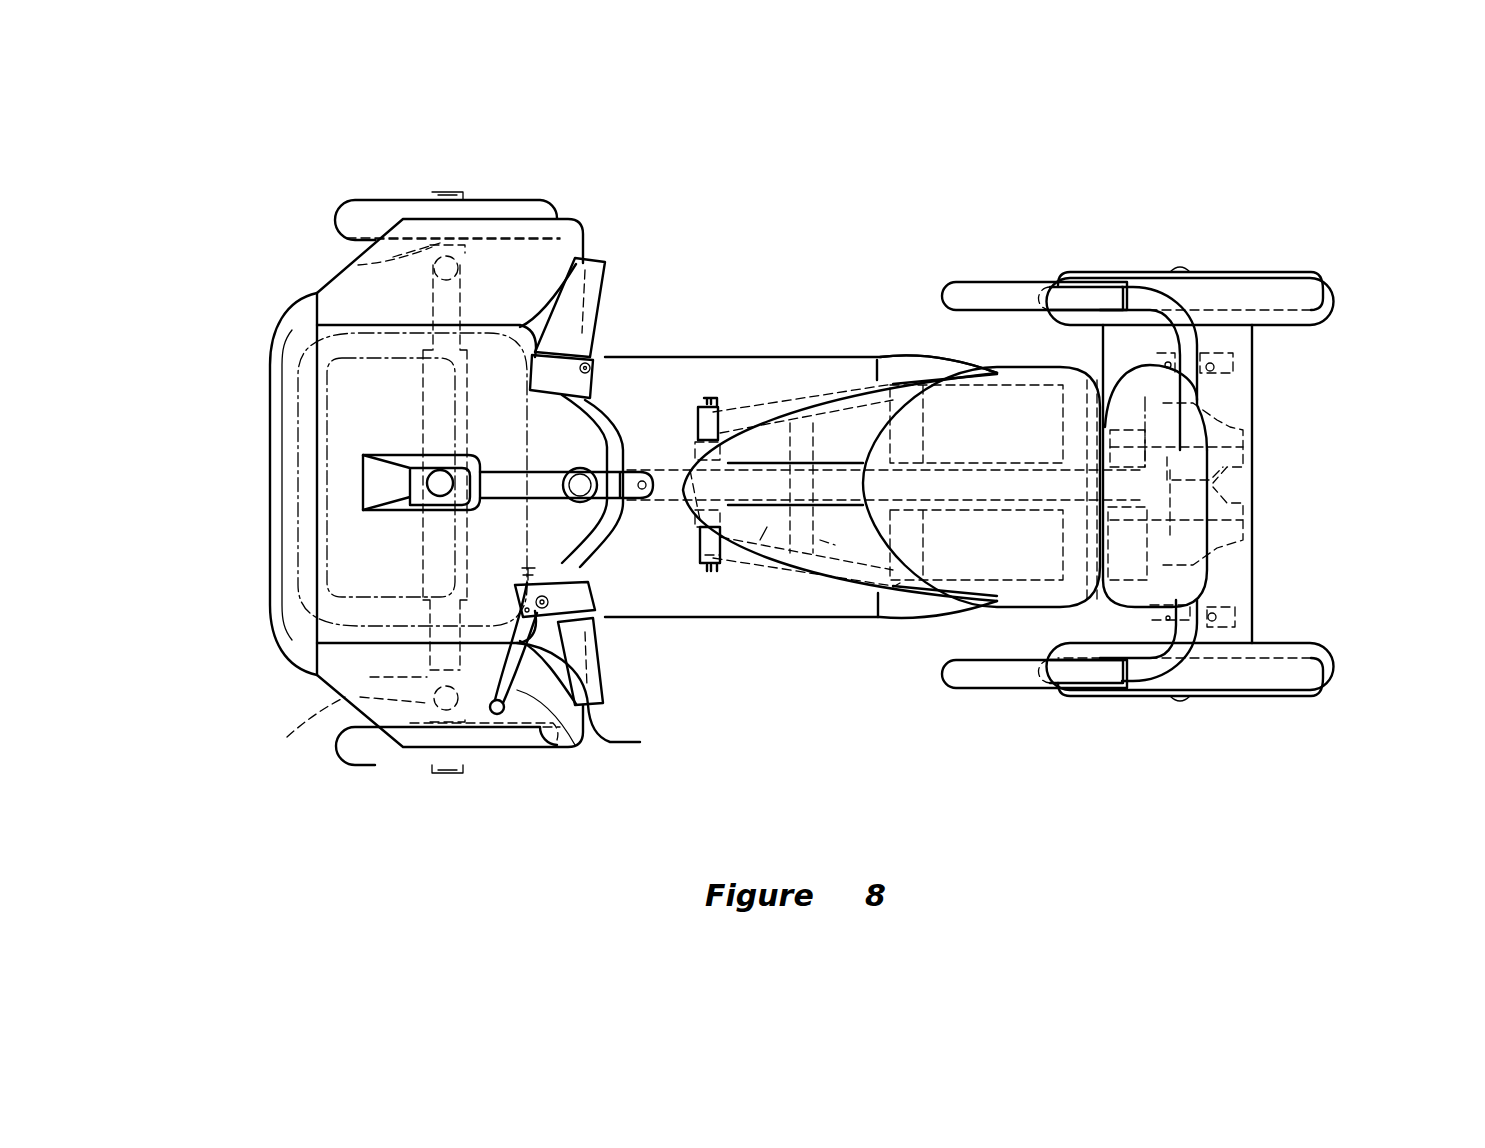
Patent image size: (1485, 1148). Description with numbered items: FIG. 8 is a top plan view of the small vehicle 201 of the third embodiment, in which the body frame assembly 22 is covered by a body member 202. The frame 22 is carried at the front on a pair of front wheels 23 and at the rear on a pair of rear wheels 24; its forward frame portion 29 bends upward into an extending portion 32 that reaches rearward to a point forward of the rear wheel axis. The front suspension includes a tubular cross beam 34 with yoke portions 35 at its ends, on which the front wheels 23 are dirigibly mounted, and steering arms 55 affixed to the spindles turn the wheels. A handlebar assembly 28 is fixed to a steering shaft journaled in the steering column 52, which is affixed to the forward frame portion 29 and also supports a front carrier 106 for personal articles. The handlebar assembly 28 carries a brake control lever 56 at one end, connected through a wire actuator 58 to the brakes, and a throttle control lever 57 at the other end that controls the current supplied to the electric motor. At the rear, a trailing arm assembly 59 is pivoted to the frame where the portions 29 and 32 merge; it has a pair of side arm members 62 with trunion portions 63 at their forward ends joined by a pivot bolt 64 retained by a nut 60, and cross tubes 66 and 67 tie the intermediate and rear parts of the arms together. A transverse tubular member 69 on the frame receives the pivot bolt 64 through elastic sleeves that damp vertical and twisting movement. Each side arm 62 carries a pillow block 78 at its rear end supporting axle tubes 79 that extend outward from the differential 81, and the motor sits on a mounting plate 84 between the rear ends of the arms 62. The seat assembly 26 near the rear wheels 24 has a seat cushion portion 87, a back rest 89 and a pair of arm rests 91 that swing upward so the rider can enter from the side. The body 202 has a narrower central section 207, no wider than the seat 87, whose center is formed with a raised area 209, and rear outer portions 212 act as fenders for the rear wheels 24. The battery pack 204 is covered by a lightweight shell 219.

The body frame assembly 22 is at (668, 462).
The front wheels 23 is at (380, 200).
The rear wheels 24 is at (1295, 272).
The seat assembly 26 is at (1115, 590).
The handlebar assembly 28 is at (603, 410).
The forward frame portion 29 is at (630, 540).
The extending portion 32 is at (972, 463).
The tubular cross beam 34 is at (440, 432).
The yoke portions 35 is at (462, 262).
The steering column 52 is at (556, 472).
The steering arms 55 is at (395, 262).
The brake control lever 56 is at (600, 736).
The throttle control lever 57 is at (520, 368).
The wire actuator 58 is at (530, 590).
The trailing arm assembly 59 is at (765, 410).
The nut 60 is at (707, 557).
The side arm members 62 is at (835, 430).
The trunion portion 63 is at (692, 403).
The pivot bolt 64 is at (712, 398).
The cross tube 66 is at (827, 537).
The cross tube 67 is at (1050, 548).
The tubular member 69 is at (680, 522).
The pillow block 78 is at (1240, 360).
The axle tubes 79 is at (1207, 595).
The differential 81 is at (1217, 420).
The mounting plate 84 is at (1207, 503).
The seat cushion portion 87 is at (893, 587).
The back rest 89 is at (1243, 447).
The arm rests 91 is at (990, 282).
The carrier 106 is at (298, 463).
The small vehicle 201 is at (1153, 190).
The body member 202 is at (843, 345).
The battery pack 204 is at (380, 550).
The narrower body section 207 is at (665, 357).
The raised area 209 is at (767, 527).
The outer portions 212 is at (1333, 297).
The lightweight shell 219 is at (1027, 385).